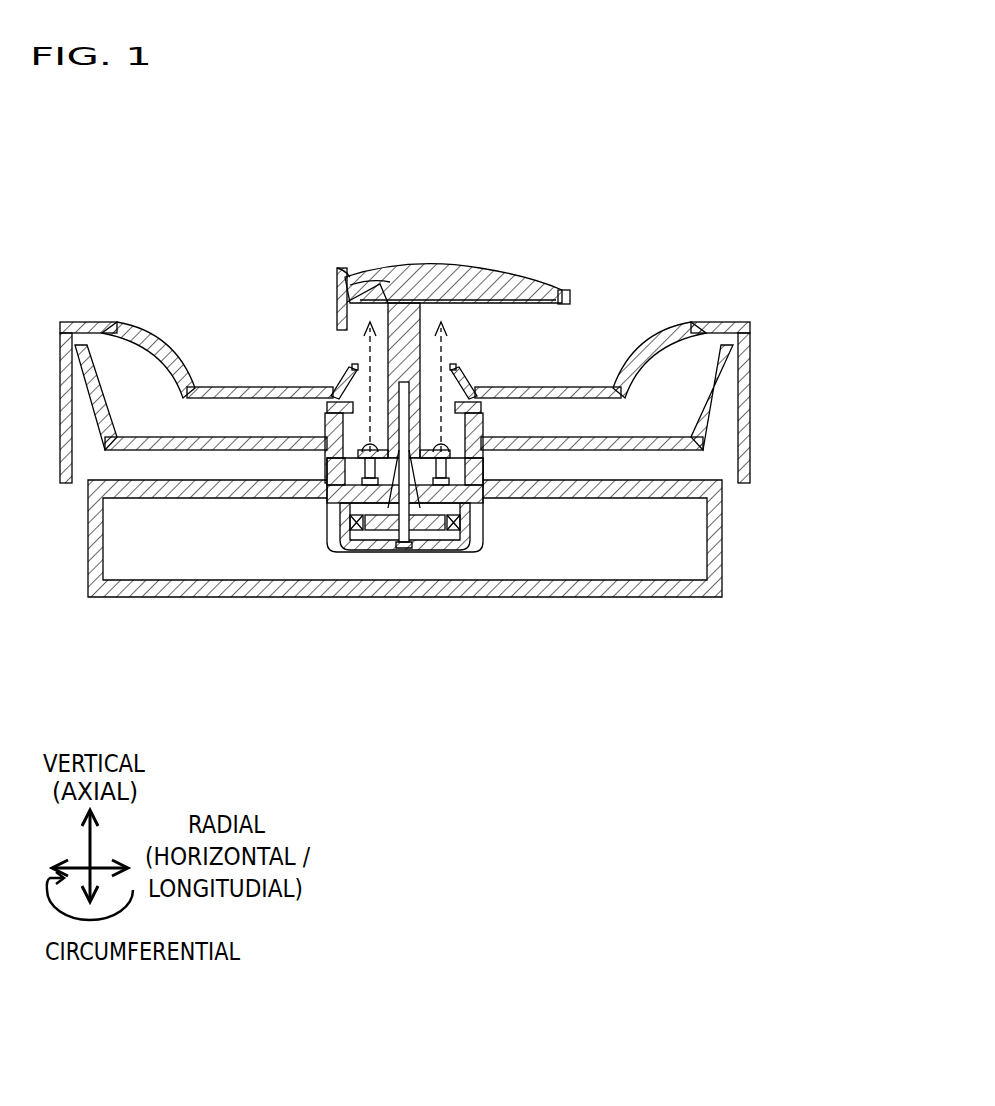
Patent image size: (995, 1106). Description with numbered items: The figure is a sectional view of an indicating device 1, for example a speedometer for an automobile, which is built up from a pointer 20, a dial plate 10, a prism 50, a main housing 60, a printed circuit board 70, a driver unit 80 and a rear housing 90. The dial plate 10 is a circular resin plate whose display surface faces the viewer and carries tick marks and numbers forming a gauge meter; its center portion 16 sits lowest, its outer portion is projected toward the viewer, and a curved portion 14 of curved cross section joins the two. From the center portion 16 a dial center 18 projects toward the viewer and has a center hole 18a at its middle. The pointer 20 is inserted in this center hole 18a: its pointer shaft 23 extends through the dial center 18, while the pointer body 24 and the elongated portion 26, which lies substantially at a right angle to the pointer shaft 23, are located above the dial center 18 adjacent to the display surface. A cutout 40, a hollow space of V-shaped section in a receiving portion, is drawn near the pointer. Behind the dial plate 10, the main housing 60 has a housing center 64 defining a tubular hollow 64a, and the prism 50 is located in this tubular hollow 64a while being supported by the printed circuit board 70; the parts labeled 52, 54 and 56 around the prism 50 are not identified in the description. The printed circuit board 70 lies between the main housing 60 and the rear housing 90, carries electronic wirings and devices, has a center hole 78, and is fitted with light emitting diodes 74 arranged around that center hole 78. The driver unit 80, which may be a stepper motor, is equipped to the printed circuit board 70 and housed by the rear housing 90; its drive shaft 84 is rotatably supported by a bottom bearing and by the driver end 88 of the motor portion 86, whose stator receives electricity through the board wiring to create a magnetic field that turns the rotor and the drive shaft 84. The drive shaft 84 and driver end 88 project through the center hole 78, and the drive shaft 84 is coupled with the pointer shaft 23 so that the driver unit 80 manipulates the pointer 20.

The indicating device 1 is at (684, 182).
The dial plate 10 is at (731, 295).
The curved portion 14 is at (152, 330).
The center portion 16 is at (255, 390).
The dial center 18 is at (80, 320).
The center hole 18a is at (365, 382).
The pointer 20 is at (448, 243).
The pointer shaft 23 is at (422, 345).
The pointer body 24 is at (371, 259).
The elongated portion 26 is at (529, 257).
The cutout 40 is at (345, 273).
The prism 50 is at (406, 518).
The drive housing 52 is at (333, 497).
The screw 54 is at (362, 465).
The bracket 56 is at (350, 430).
The main housing 60 is at (740, 510).
The housing center 64 is at (473, 420).
The tubular hollow 64a is at (322, 408).
The printed circuit board 70 is at (700, 512).
The light emitting diodes 74 is at (333, 528).
The center hole 78 is at (480, 534).
The driver unit 80 is at (478, 543).
The drive shaft 84 is at (398, 520).
The motor portion 86 is at (418, 525).
The driver end 88 is at (437, 540).
The rear housing 90 is at (708, 600).